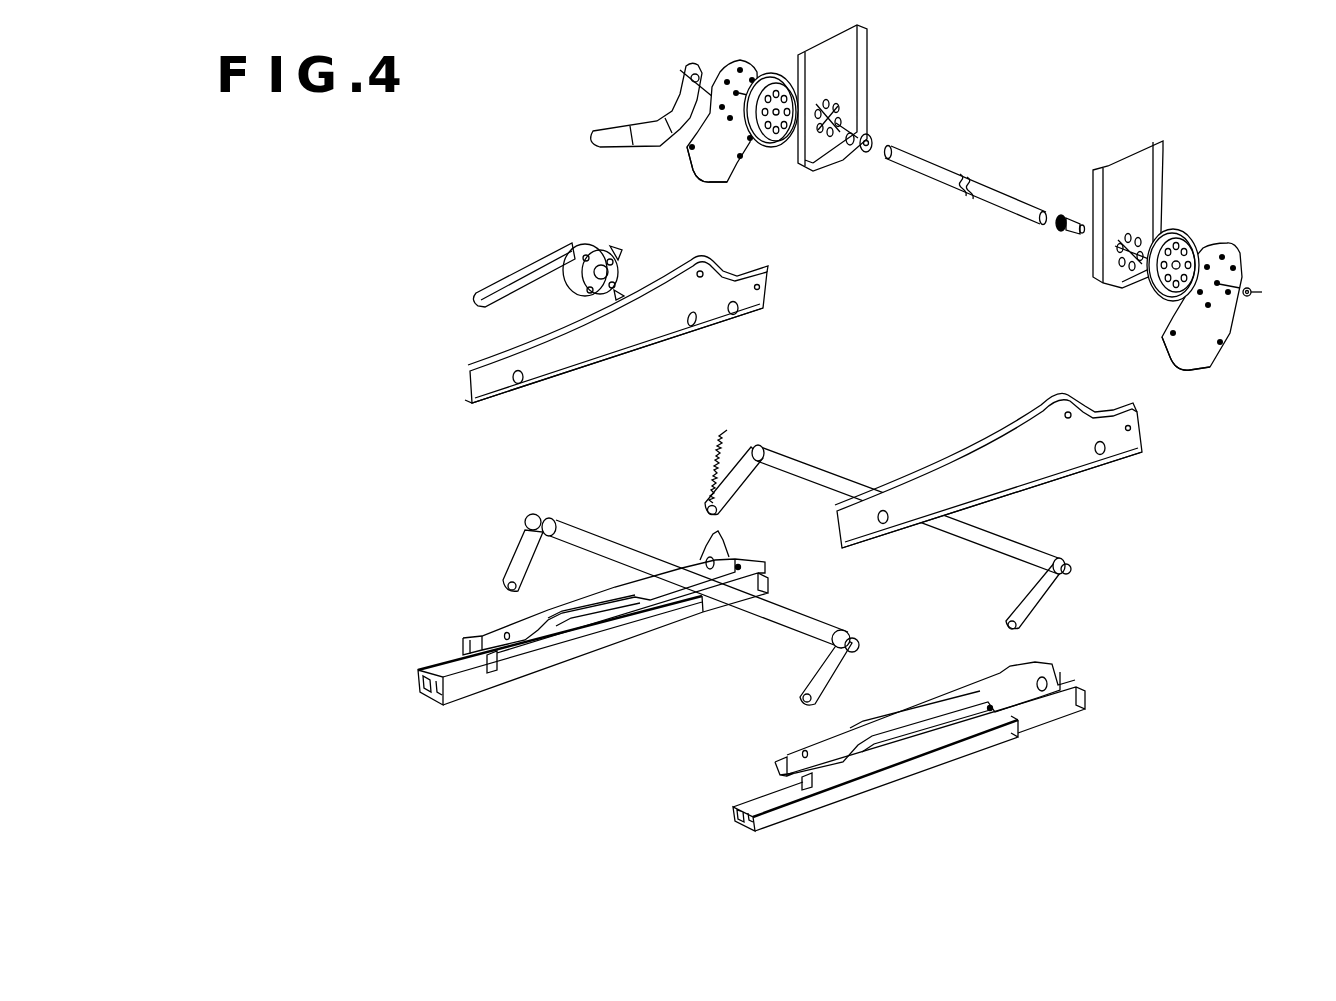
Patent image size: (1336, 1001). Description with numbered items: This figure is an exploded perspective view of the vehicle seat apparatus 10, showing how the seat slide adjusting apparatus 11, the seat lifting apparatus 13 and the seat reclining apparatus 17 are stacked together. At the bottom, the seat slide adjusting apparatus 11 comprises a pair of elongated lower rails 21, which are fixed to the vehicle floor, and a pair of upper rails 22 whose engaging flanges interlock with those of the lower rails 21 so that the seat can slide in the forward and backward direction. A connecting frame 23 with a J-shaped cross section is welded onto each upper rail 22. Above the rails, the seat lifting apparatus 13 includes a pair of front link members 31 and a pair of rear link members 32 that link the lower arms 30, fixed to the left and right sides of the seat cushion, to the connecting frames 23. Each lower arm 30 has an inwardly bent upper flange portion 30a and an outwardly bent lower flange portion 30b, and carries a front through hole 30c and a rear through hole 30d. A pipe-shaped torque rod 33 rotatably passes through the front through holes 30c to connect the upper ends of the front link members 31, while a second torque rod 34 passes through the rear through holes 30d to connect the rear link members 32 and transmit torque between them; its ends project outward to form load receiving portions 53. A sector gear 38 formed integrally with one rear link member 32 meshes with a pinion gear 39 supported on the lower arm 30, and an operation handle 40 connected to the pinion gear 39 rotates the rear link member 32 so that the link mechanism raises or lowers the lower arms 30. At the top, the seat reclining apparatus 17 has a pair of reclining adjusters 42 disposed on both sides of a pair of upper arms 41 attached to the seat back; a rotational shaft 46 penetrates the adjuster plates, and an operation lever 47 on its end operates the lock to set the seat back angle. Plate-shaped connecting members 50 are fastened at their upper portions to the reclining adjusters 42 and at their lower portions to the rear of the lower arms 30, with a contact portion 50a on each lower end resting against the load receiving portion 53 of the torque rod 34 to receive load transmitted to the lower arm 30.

The vehicle seat apparatus 10 is at (1030, 134).
The seat slide adjusting apparatus 11 is at (960, 774).
The seat lifting apparatus 13 is at (1043, 632).
The seat reclining apparatus 17 is at (1221, 201).
The lower rail 21 is at (810, 807).
The upper rail 22 is at (833, 780).
The connecting frame 23 is at (820, 747).
The lower arm 30 is at (617, 343).
The upper flange portion 30a is at (772, 274).
The lower flange portion 30b is at (468, 400).
The front through hole 30c is at (517, 383).
The rear through hole 30d is at (734, 314).
The front link member 31 is at (528, 557).
The rear link member 32 is at (708, 498).
The torque rod 33 is at (750, 607).
The torque rod 34 is at (982, 543).
The sector gear 38 is at (713, 445).
The pinion gear 39 is at (603, 248).
The operation handle 40 is at (527, 280).
The upper arm 41 is at (846, 67).
The reclining adjuster 42 is at (773, 75).
The rotational shaft 46 is at (993, 197).
The operation lever 47 is at (618, 130).
The connecting member 50 is at (725, 155).
The contact portion 50a is at (707, 182).
The load receiving portion 53 is at (1070, 560).